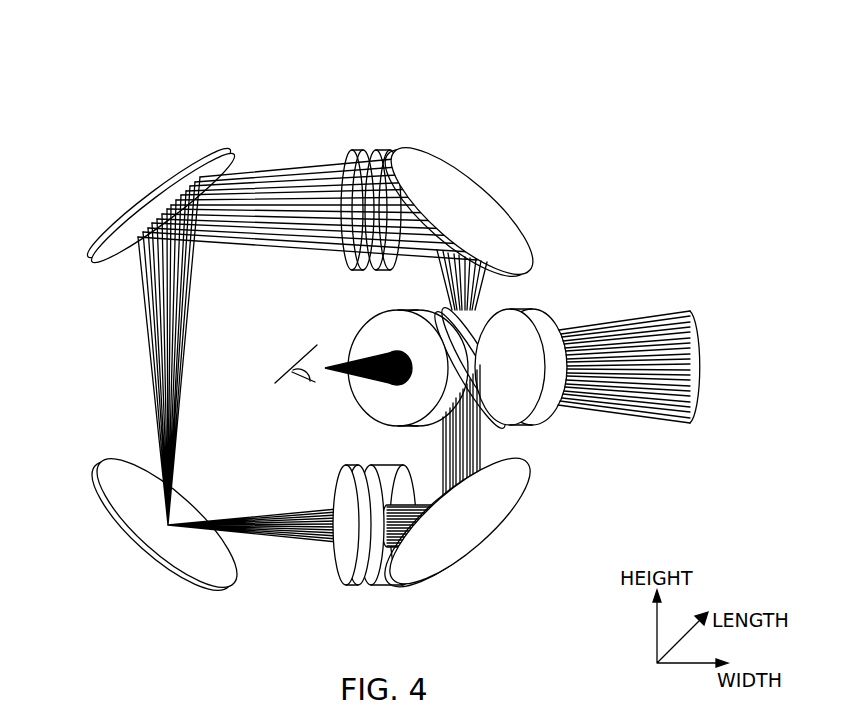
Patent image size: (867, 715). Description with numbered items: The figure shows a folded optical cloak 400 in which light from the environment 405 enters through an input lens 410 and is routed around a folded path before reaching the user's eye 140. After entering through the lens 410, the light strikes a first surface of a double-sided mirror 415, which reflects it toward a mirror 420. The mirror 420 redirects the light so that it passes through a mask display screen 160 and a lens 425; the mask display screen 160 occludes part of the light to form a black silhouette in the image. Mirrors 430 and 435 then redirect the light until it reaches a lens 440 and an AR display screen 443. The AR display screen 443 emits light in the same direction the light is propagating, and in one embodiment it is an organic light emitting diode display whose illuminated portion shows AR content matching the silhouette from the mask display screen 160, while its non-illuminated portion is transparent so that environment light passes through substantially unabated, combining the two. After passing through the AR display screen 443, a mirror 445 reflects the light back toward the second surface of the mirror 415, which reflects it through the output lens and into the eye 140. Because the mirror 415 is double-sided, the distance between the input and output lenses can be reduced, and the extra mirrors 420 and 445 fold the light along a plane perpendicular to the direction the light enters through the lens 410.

The folded optical cloak 400 is at (640, 100).
The environment 405 is at (707, 338).
The lens 410 is at (543, 317).
The mirror 415 is at (490, 428).
The mirror 420 is at (505, 210).
The lens 425 is at (350, 152).
The mirror 430 is at (112, 240).
The mirror 435 is at (117, 517).
The lens 440 is at (353, 577).
The AR display screen 443 is at (377, 586).
The mirror 445 is at (490, 524).
The mask display screen 160 is at (385, 150).
The eye 140 is at (298, 384).